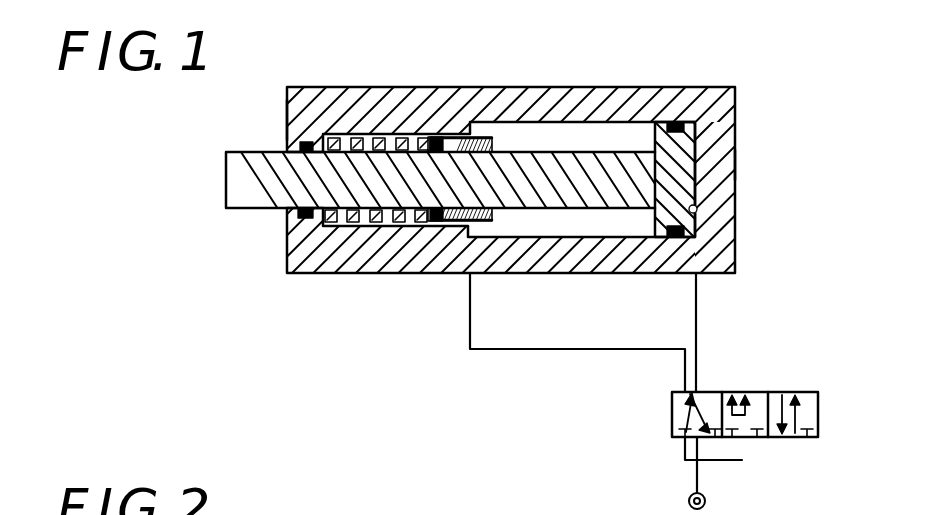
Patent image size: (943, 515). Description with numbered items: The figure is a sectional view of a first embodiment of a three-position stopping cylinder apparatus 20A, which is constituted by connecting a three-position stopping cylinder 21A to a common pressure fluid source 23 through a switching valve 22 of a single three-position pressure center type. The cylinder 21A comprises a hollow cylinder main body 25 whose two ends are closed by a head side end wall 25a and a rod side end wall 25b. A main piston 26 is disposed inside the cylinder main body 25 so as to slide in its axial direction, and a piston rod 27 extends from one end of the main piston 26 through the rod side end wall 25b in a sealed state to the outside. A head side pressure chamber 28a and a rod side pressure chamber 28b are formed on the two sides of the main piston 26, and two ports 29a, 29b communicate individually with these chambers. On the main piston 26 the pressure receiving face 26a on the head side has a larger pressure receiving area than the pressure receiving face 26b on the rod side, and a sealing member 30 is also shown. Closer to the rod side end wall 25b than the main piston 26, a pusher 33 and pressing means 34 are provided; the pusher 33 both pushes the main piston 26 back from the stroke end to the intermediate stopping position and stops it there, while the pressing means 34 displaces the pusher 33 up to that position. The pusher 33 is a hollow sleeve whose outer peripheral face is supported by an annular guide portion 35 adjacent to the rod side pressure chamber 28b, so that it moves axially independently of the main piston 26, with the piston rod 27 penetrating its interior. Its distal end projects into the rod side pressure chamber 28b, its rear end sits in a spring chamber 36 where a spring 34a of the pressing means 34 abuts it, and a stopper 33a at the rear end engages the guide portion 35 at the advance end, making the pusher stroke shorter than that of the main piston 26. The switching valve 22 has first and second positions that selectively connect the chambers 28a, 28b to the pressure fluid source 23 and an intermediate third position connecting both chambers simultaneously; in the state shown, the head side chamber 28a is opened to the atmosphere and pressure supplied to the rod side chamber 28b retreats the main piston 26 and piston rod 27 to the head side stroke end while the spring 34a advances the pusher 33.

The cylinder apparatus 20A is at (514, 261).
The 3-position stopping cylinder 21A is at (514, 167).
The switching valve 22 is at (755, 392).
The pressure fluid source 23 is at (707, 501).
The cylinder main body 25 is at (523, 96).
The head side end wall 25a is at (737, 167).
The rod side end wall 25b is at (287, 117).
The main piston 26 is at (674, 123).
The pressure receiving face on the head side 26a is at (700, 140).
The pressure receiving face on the rod side 26b is at (668, 229).
The piston rod 27 is at (621, 168).
The head side pressure chamber 28a is at (697, 204).
The rod side pressure chamber 28b is at (542, 222).
The port 29a is at (697, 273).
The port 29b is at (470, 282).
The sealing member 30 is at (287, 223).
The pusher 33 is at (500, 128).
The stopper 33a is at (440, 138).
The pressing means 34 is at (350, 136).
The spring 34a is at (348, 224).
The guide portion 35 is at (462, 136).
The spring chamber 36 is at (395, 222).